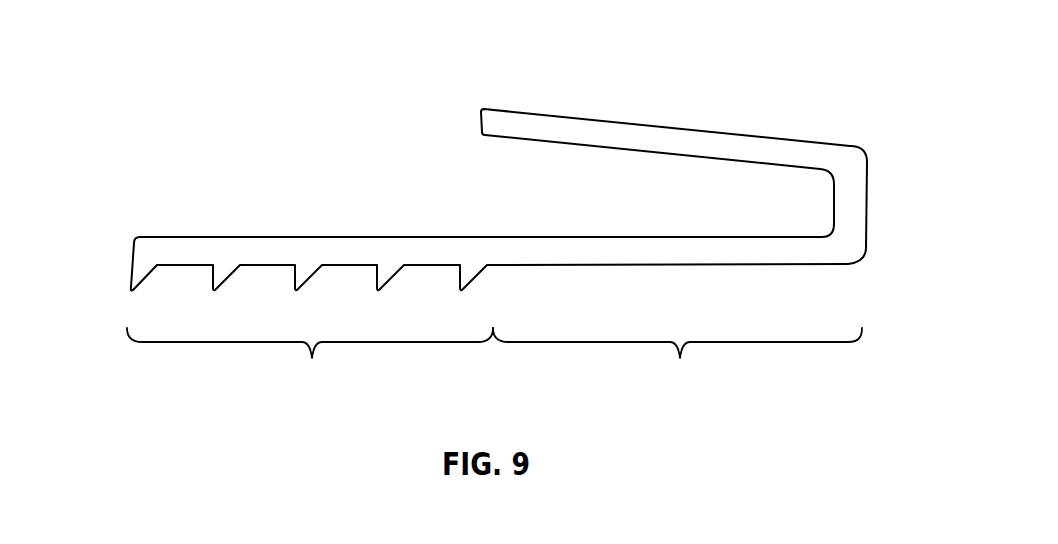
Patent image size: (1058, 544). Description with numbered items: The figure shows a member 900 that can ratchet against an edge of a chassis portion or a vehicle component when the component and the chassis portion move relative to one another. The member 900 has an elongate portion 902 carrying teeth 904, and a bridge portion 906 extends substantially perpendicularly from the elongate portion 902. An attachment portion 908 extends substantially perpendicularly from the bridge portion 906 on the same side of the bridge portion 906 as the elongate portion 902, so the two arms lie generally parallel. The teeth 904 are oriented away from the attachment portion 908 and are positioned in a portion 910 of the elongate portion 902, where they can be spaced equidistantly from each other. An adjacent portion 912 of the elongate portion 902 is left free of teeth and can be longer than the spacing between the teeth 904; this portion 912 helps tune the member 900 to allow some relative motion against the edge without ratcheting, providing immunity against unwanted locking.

The member 900 is at (802, 69).
The elongate portion 902 is at (147, 255).
The teeth 904 is at (143, 270).
The bridge portion 906 is at (867, 205).
The attachment portion 908 is at (575, 116).
The portion 910 is at (310, 360).
The portion 912 is at (677, 360).